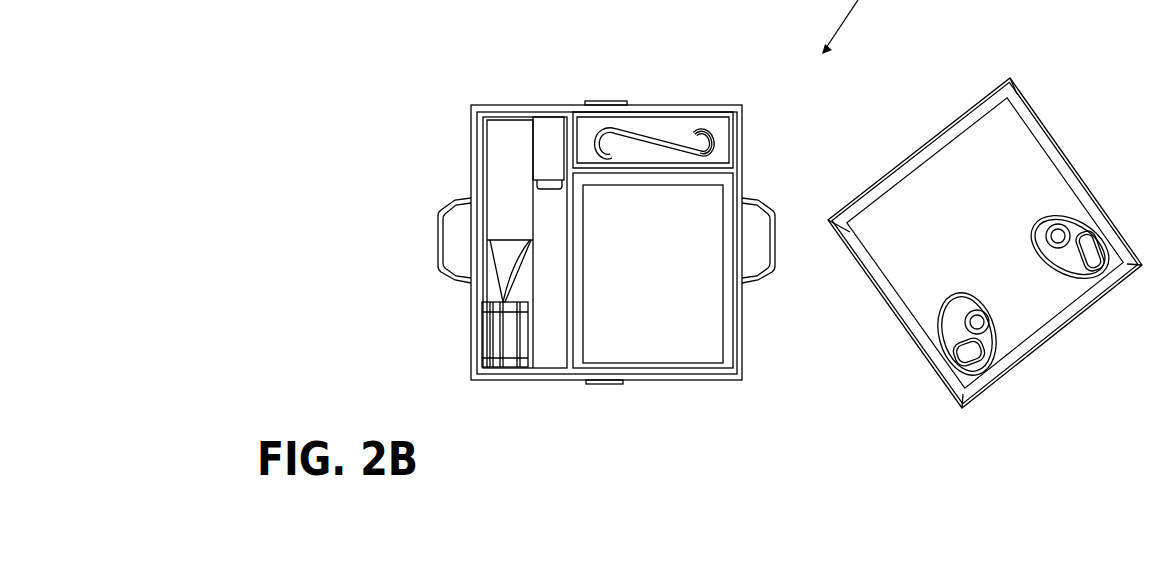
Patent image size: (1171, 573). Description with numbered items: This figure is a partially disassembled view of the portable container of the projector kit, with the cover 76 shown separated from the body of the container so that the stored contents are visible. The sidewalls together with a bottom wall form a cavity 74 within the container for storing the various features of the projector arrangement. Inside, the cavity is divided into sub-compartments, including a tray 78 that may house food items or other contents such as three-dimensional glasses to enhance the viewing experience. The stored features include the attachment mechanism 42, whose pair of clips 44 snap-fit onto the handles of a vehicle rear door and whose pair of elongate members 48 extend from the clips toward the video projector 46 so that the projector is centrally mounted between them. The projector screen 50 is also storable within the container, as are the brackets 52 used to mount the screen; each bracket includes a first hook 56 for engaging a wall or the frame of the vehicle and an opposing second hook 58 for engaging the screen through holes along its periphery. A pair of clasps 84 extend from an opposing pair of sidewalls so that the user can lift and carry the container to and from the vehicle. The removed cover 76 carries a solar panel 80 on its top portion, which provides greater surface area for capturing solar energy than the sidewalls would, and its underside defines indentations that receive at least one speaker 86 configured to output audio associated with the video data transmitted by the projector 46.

The attachment mechanism 42 is at (480, 151).
The clips 44 is at (512, 333).
The video projector 46 is at (553, 140).
The elongate members 48 is at (500, 181).
The projector screen 50 is at (643, 338).
The brackets 52 is at (648, 138).
The first hook 56 is at (591, 140).
The second hook 58 is at (716, 140).
The cavity 74 is at (680, 209).
The cover 76 is at (1015, 78).
The tray 78 is at (572, 242).
The solar panel 80 is at (888, 170).
The clasps 84 is at (438, 268).
The speaker 86 is at (1052, 262).